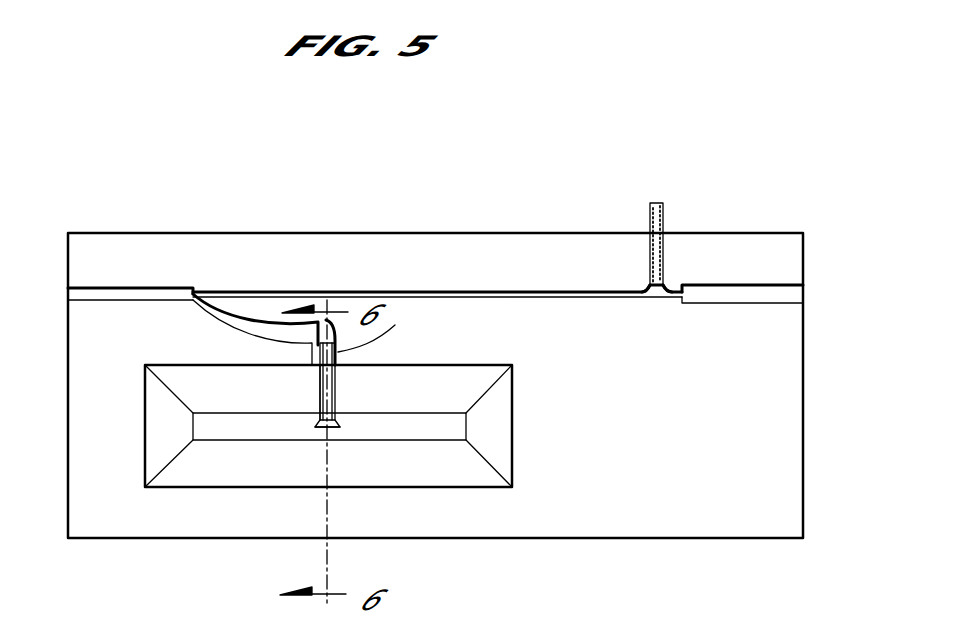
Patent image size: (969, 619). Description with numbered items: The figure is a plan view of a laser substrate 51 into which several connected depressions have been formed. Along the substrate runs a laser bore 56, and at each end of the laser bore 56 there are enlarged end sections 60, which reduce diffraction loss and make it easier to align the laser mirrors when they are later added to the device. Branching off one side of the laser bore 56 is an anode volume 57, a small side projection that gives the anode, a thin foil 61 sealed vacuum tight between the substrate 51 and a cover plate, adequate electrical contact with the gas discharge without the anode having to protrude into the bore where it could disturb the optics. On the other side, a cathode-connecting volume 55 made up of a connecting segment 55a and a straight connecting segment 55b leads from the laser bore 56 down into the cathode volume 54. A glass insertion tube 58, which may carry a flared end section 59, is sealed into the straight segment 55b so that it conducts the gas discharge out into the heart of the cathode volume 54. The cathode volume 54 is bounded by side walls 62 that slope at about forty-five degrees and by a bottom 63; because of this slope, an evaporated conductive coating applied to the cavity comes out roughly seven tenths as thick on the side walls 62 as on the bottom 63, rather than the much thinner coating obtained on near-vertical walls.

The laser substrate 51 is at (735, 522).
The cathode volume 54 is at (407, 432).
The cathode-connecting volume 55 is at (318, 320).
The connecting segment 55a is at (253, 323).
The connecting segment 55b is at (395, 325).
The laser bore 56 is at (553, 293).
The anode volume 57 is at (672, 290).
The glass insertion tube 58 is at (318, 387).
The flared end section 59 is at (313, 417).
The enlarged end sections 60 is at (104, 293).
The thin foil 61 is at (665, 205).
The side walls 62 is at (470, 385).
The bottom 63 is at (450, 427).